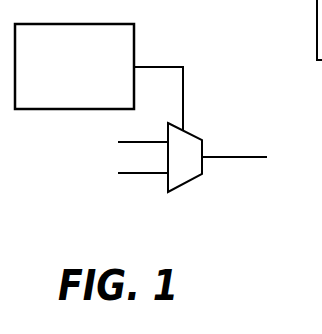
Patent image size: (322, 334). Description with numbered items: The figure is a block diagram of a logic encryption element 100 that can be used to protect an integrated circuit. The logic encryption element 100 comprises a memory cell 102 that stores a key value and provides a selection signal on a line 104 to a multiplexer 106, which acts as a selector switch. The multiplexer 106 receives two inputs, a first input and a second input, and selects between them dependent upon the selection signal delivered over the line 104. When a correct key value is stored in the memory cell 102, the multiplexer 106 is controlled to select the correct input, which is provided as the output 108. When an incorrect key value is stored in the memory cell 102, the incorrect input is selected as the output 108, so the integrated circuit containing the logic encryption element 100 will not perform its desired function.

The logic encryption element 100 is at (158, 133).
The memory cell 102 is at (92, 101).
The line 104 is at (183, 93).
The multiplexer 106 is at (183, 187).
The output 108 is at (248, 157).